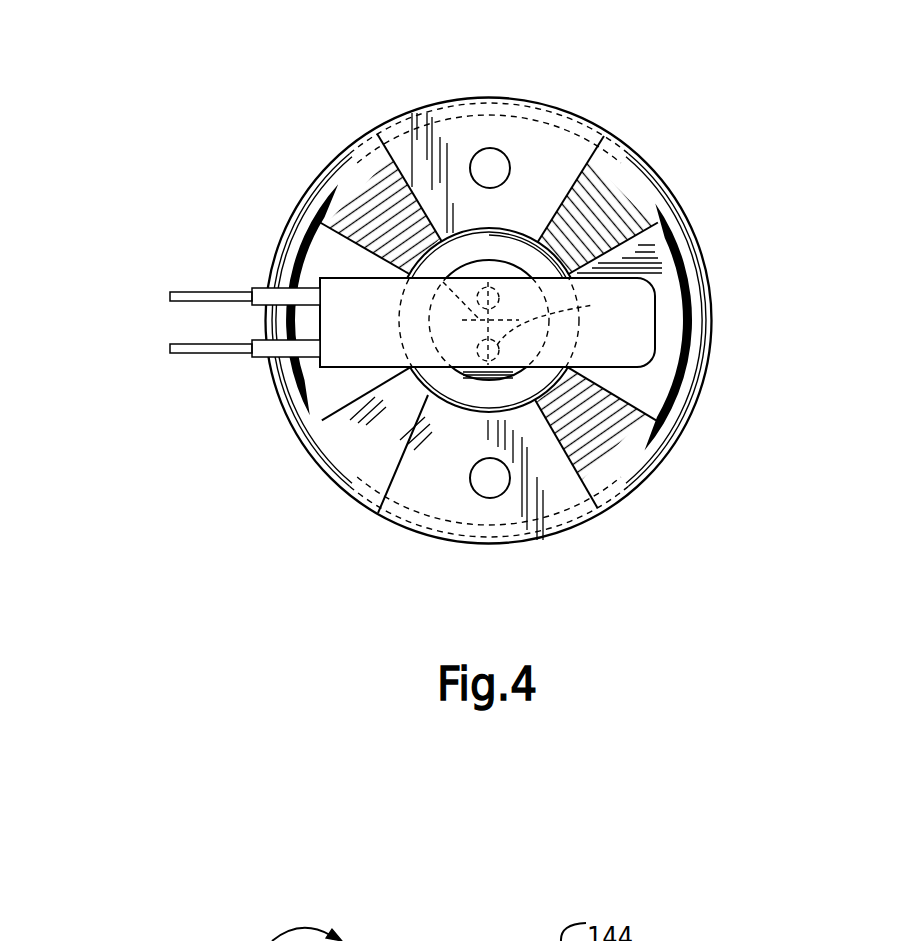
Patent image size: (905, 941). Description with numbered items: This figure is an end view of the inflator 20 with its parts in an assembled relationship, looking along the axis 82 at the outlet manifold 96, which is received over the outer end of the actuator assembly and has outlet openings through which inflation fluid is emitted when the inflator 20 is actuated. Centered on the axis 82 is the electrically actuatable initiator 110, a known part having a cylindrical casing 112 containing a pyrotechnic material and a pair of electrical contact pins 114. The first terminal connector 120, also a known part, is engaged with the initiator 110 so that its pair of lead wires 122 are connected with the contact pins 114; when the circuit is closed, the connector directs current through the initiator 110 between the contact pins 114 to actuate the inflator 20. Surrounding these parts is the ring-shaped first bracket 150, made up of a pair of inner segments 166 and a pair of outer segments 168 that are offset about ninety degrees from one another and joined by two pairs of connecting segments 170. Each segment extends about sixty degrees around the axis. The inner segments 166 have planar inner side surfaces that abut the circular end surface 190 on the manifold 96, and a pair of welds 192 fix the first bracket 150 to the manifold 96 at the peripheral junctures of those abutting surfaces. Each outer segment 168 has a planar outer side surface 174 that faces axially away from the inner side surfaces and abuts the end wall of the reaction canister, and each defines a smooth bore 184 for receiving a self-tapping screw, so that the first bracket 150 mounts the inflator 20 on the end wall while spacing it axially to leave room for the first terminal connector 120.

The inflator 20 is at (317, 48).
The axis 82 is at (410, 230).
The outlet manifold 96 is at (328, 143).
The initiator 110 is at (447, 403).
The cylindrical casing 112 is at (374, 503).
The electrical contact pins 114 is at (570, 313).
The first terminal connector 120 is at (315, 379).
The lead wires 122 is at (213, 342).
The first bracket 150 is at (310, 181).
The inner segments 166 is at (330, 262).
The outer segments 168 is at (455, 137).
The connecting segments 170 is at (363, 187).
The outer side surface 174 is at (496, 135).
The bore 184 is at (518, 140).
The circular end surface 190 is at (697, 320).
The welds 192 is at (684, 259).